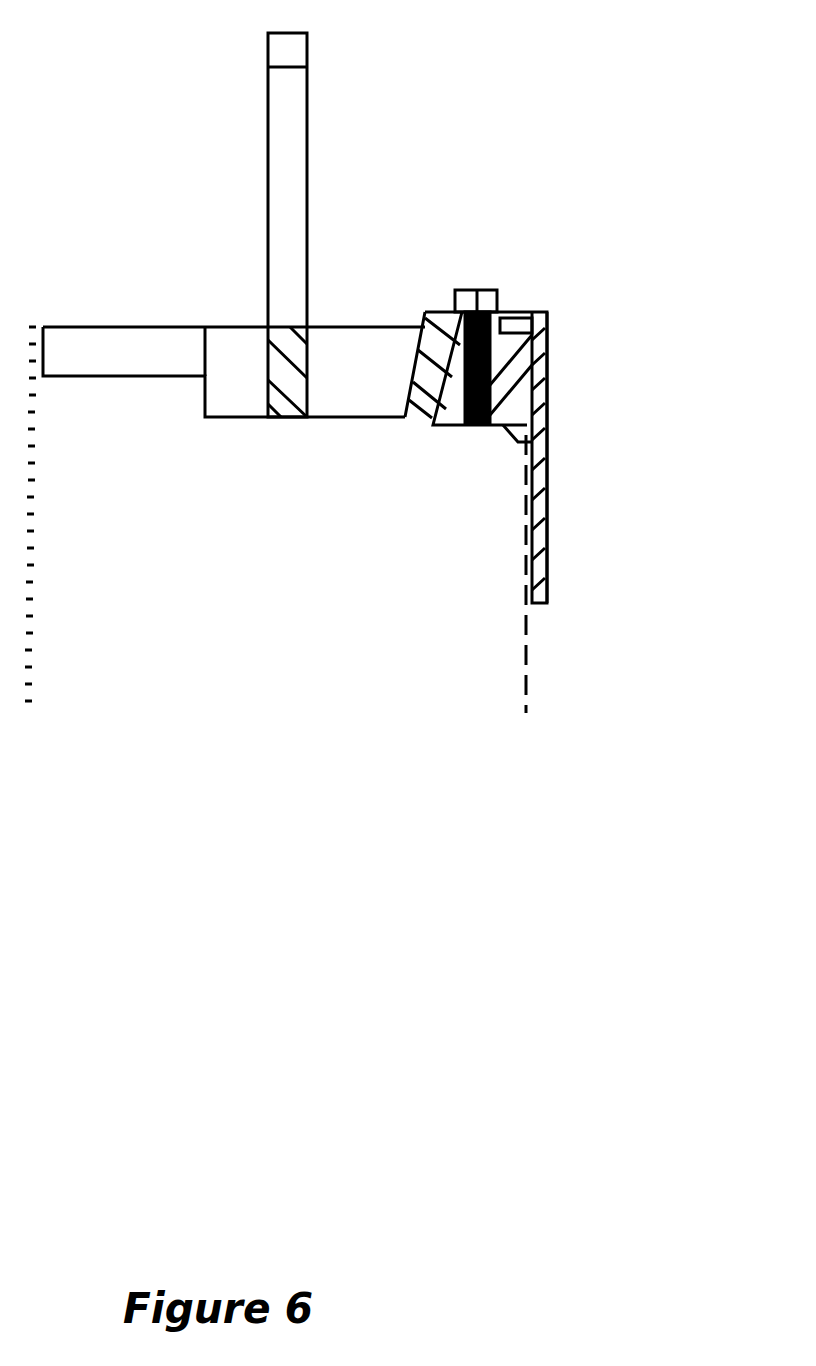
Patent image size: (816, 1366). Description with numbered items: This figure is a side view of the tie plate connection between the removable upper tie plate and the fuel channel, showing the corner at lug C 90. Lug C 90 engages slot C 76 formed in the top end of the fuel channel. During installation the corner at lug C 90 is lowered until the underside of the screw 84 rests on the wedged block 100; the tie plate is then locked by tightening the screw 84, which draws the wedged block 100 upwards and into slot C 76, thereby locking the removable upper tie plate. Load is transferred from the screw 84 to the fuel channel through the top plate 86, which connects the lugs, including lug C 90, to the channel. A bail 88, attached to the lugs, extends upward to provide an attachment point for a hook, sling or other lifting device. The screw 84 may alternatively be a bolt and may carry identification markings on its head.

The bail 88 is at (272, 138).
The screw 84 is at (483, 290).
The top plate 86 is at (522, 312).
The slot C 76 is at (547, 367).
The lug C 90 is at (545, 400).
The wedged block 100 is at (522, 430).